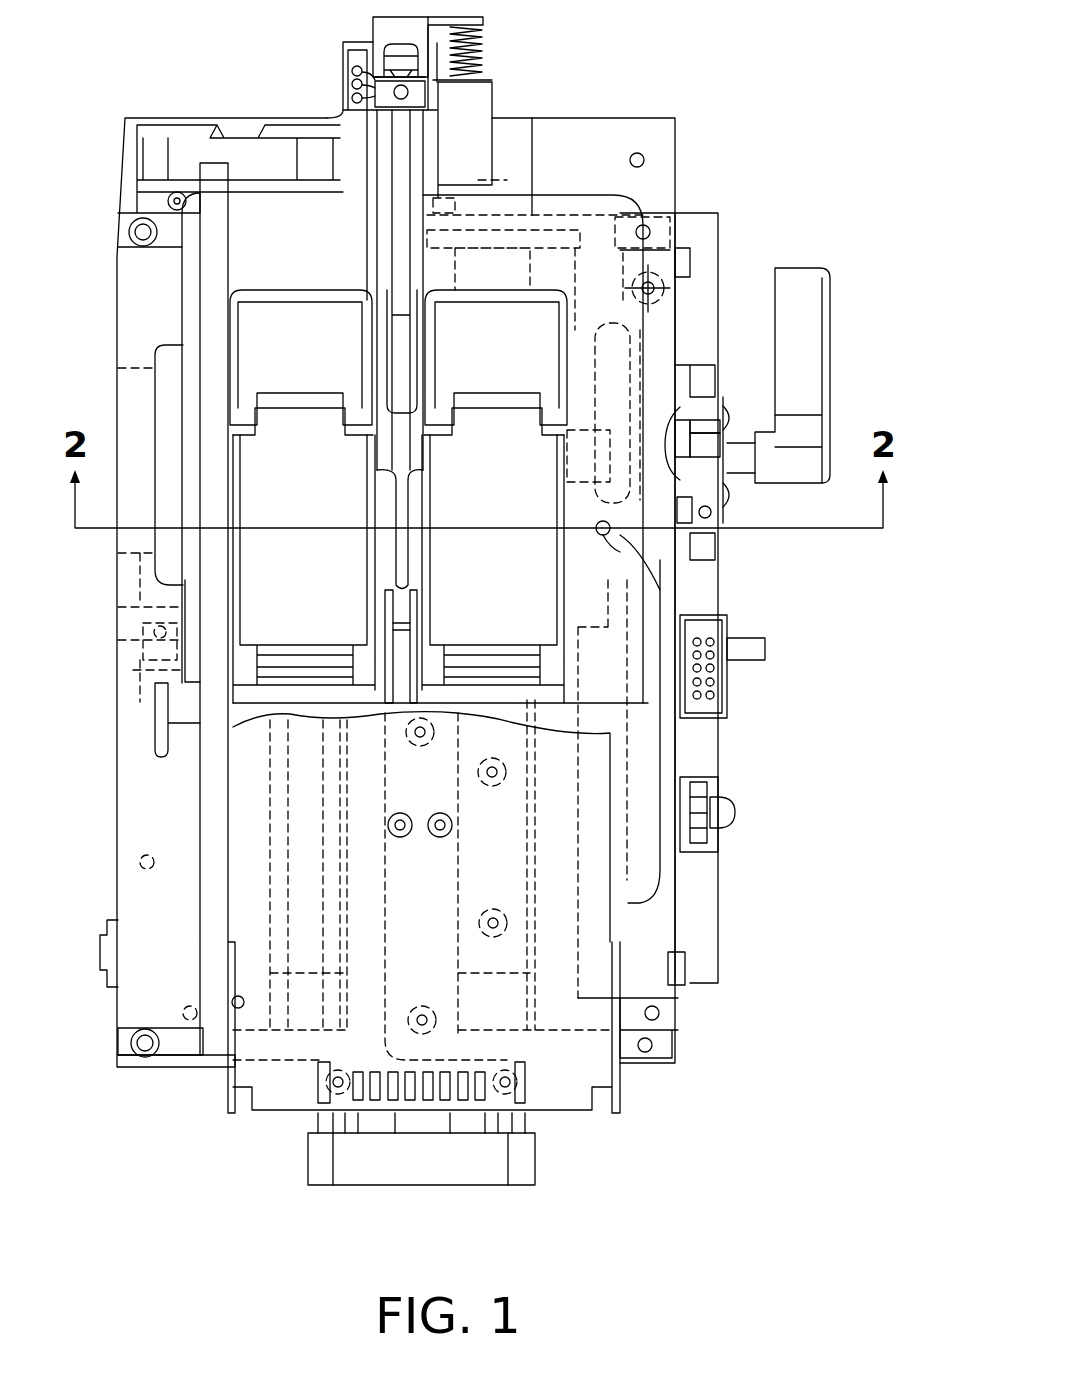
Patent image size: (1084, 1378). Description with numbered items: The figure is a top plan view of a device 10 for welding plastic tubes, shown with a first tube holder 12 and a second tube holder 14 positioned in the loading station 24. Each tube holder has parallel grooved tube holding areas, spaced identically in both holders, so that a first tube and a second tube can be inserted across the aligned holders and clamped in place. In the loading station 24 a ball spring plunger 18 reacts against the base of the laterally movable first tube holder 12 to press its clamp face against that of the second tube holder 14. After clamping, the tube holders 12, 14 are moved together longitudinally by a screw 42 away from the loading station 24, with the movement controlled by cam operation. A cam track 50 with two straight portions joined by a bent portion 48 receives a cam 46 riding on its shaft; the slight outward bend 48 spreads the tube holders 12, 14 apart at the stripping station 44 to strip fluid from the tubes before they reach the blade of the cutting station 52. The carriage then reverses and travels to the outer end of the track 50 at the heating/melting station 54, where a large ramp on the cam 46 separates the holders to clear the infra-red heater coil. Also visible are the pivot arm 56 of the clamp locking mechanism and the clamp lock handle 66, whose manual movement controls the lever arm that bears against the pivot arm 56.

The device 10 is at (706, 83).
The first tube holder 12 is at (510, 580).
The second tube holder 14 is at (327, 580).
The ball spring plunger 18 is at (688, 503).
The loading station 24 is at (824, 558).
The screw 42 is at (233, 727).
The stripping station 44 is at (859, 360).
The cam 46 is at (606, 534).
The bent portion 48 is at (640, 565).
The cam track 50 is at (645, 762).
The cutting station 52 is at (859, 360).
The heating/melting station 54 is at (742, 872).
The pivot arm 56 is at (660, 313).
The clamp lock handle 66 is at (807, 308).